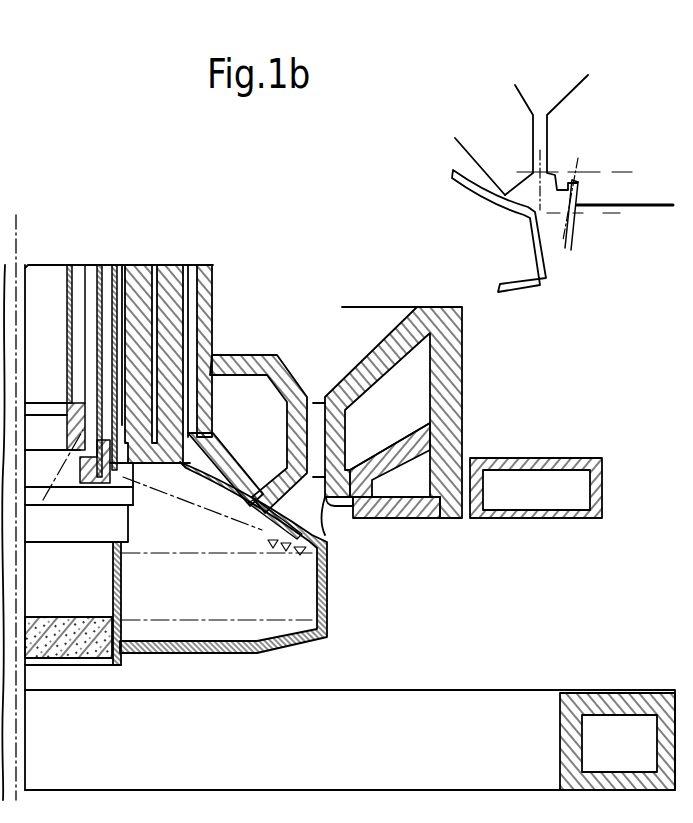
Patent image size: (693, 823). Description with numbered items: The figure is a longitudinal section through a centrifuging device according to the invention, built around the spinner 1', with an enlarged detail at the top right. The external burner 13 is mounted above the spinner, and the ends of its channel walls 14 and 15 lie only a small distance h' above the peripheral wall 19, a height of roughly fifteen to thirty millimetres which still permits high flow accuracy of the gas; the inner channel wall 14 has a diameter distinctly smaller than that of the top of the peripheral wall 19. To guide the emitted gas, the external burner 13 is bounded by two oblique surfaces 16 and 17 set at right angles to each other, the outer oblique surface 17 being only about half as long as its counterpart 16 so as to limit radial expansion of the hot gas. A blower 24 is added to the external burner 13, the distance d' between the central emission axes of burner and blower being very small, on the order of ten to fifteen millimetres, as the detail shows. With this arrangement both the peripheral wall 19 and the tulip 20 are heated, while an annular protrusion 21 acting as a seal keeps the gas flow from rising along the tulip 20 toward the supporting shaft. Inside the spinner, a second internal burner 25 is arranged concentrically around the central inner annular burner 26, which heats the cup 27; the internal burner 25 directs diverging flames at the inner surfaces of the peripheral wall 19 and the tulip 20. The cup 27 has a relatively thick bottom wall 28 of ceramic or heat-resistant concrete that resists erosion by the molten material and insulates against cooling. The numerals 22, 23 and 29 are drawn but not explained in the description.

The spinner 1' is at (476, 604).
The external burner 13 is at (339, 366).
The inner channel wall 14 is at (283, 410).
The channel wall 15 is at (327, 462).
The oblique surface 16 is at (323, 495).
The outer oblique surface 17 is at (333, 508).
The peripheral wall 19 is at (333, 612).
The tulip 20 is at (255, 528).
The annular protrusion 21 is at (250, 505).
The inner body 22 is at (167, 315).
The sleeve 23 is at (202, 335).
The blower 24 is at (372, 518).
The second internal burner 25 is at (108, 275).
The central inner annular burner 26 is at (95, 307).
The cup 27 is at (125, 578).
The bottom wall 28 is at (50, 615).
The teeth 29 is at (293, 550).
The distance d' is at (600, 176).
The distance h' is at (602, 200).